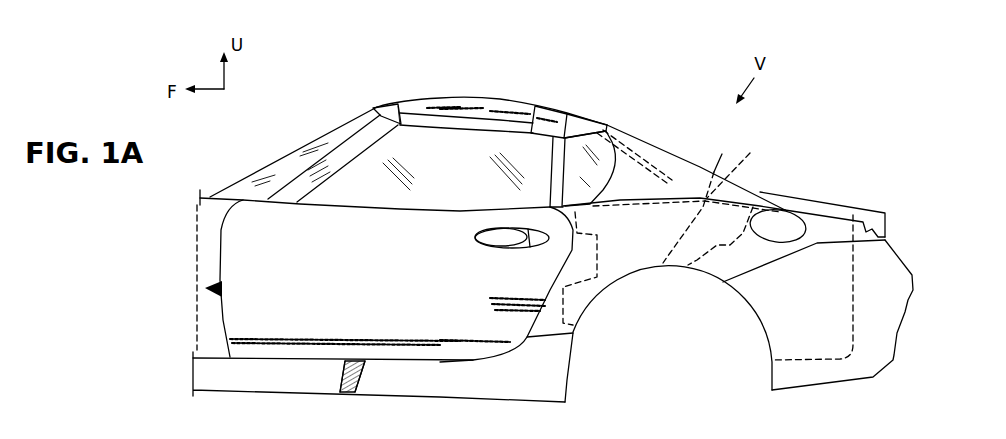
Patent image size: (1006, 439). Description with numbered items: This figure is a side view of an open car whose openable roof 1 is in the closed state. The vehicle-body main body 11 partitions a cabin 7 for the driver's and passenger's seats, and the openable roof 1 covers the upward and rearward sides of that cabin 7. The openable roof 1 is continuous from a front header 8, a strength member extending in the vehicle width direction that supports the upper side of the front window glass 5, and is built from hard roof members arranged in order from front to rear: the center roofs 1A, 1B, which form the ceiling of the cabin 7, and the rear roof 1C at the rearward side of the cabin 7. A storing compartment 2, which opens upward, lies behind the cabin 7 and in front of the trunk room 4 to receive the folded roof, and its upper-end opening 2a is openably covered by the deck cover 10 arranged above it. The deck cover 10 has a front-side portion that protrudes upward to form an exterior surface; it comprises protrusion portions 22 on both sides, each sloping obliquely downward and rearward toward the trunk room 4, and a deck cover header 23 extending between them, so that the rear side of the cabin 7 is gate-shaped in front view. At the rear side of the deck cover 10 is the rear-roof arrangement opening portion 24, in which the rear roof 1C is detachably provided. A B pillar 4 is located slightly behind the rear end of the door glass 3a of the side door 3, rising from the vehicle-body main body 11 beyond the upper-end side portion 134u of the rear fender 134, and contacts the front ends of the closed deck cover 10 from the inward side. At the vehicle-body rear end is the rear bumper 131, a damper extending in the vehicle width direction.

The openable roof 1 is at (632, 96).
The center roof 1A is at (478, 98).
The center roof 1B is at (543, 104).
The rear roof 1C is at (628, 140).
The storing compartment 2 is at (569, 251).
The upper-end opening 2a is at (728, 199).
The side door 3 is at (423, 367).
The door glass 3a is at (471, 162).
The B pillar 4 is at (552, 168).
The front window glass 5 is at (313, 133).
The cabin 7 is at (438, 182).
The front header 8 is at (390, 107).
The deck cover 10 is at (695, 160).
The vehicle-body main body 11 is at (298, 397).
The protrusion portion 22 is at (698, 198).
The deck cover header 23 is at (592, 114).
The rear-roof arrangement opening portion 24 is at (656, 161).
The rear bumper 131 is at (913, 288).
The rear fender 134 is at (848, 217).
The upper-end side portion 134u is at (790, 207).